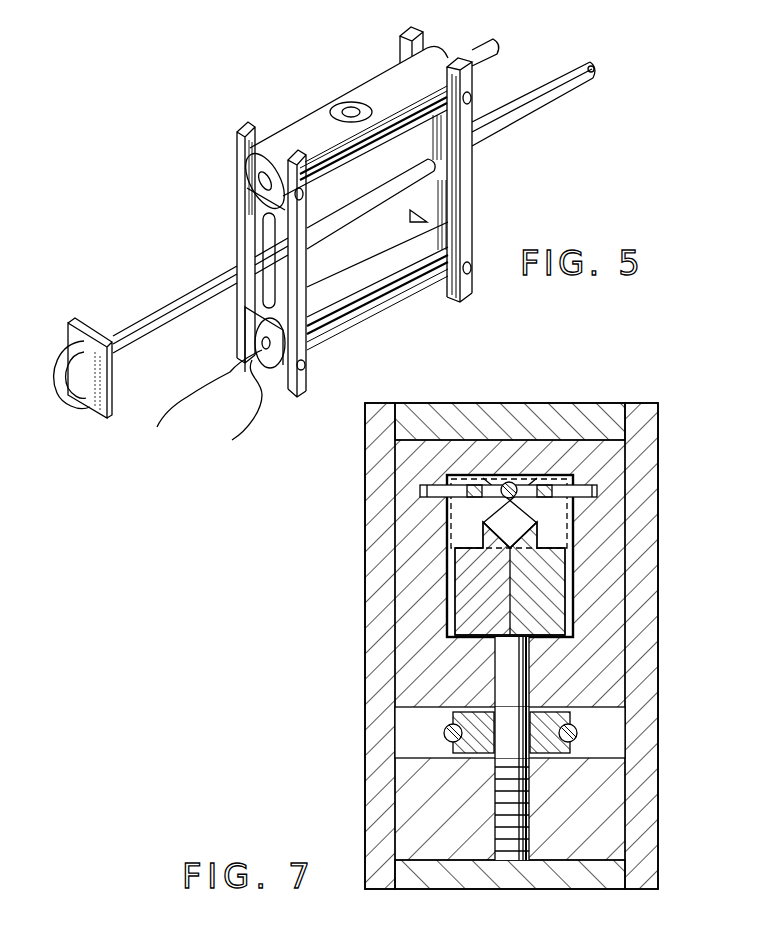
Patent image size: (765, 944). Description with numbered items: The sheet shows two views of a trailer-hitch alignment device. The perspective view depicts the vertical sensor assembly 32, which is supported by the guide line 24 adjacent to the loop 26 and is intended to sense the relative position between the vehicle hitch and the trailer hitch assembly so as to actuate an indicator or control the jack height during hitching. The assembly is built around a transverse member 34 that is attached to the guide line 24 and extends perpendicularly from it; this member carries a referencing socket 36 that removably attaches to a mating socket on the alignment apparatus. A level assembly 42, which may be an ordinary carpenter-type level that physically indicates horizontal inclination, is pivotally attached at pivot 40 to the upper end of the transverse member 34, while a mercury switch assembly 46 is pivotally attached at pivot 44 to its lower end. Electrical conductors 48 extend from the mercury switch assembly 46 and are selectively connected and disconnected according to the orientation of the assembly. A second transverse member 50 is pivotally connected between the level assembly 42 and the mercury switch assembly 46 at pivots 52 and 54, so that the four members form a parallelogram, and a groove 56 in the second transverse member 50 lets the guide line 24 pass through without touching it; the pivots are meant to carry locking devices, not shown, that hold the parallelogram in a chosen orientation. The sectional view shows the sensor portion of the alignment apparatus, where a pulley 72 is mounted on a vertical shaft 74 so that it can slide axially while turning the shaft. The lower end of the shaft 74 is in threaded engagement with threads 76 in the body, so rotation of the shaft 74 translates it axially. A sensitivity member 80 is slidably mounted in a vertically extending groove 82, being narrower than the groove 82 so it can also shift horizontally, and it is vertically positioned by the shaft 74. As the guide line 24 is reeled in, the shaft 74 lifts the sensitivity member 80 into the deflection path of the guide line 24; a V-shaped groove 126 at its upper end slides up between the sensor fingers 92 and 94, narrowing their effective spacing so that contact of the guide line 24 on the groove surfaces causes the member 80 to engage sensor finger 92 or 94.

In FIG. 5, the guide line 24 is at (560, 88).
In FIG. 7, the guide line 24 is at (510, 482).
In FIG. 5, the loop 26 is at (78, 344).
In FIG. 5, the vertical sensor assembly 32 is at (366, 84).
In FIG. 5, the transverse member 34 is at (430, 195).
In FIG. 5, the referencing socket 36 is at (487, 40).
In FIG. 5, the pivot 40 is at (471, 99).
In FIG. 5, the level assembly 42 is at (340, 108).
In FIG. 5, the pivot 44 is at (471, 269).
In FIG. 5, the mercury switch assembly 46 is at (377, 302).
In FIG. 5, the electrical conductors 48 is at (258, 385).
In FIG. 5, the second transverse member 50 is at (240, 203).
In FIG. 5, the pivot 52 is at (305, 191).
In FIG. 5, the pivot 54 is at (306, 365).
In FIG. 5, the groove 56 is at (262, 250).
In FIG. 7, the pulley 72 is at (473, 718).
In FIG. 7, the vertical shaft 74 is at (510, 652).
In FIG. 7, the threads 76 is at (512, 817).
In FIG. 7, the sensitivity member 80 is at (482, 590).
In FIG. 7, the groove 82 is at (575, 510).
In FIG. 7, the sensor finger 92 is at (448, 490).
In FIG. 7, the sensor finger 94 is at (565, 478).
In FIG. 7, the V-shaped groove 126 is at (505, 518).